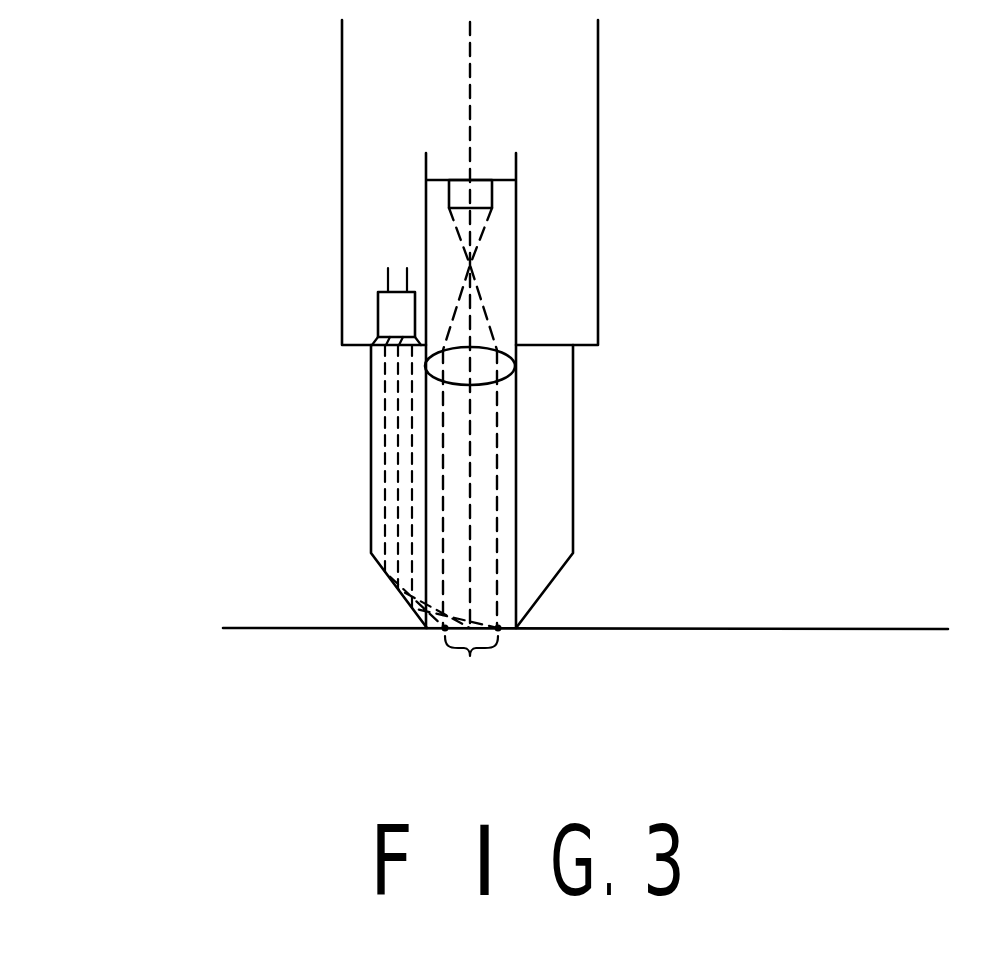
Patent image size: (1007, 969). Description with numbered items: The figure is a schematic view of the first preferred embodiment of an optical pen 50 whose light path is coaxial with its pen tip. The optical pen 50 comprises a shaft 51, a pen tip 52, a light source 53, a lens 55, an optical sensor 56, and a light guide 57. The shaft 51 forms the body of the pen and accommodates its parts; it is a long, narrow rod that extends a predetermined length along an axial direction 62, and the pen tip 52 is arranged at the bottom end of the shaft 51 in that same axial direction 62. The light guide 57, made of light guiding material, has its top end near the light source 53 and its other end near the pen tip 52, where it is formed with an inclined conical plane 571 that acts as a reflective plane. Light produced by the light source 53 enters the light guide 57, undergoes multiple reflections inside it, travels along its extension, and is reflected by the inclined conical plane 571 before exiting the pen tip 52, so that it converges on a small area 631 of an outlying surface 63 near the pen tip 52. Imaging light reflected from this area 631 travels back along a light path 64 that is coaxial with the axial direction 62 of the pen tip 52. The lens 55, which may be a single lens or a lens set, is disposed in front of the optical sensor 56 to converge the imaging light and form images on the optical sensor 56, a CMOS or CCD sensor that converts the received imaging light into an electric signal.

The optical pen 50 is at (285, 218).
The shaft 51 is at (348, 103).
The pen tip 52 is at (427, 627).
The light source 53 is at (392, 320).
The lens 55 is at (505, 365).
The optical sensor 56 is at (480, 197).
The light guide 57 is at (372, 432).
The inclined conical plane 571 is at (392, 582).
The axial direction 62 is at (470, 57).
The outlying surface 63 is at (790, 628).
The area 631 is at (471, 668).
The light path 64 is at (473, 478).